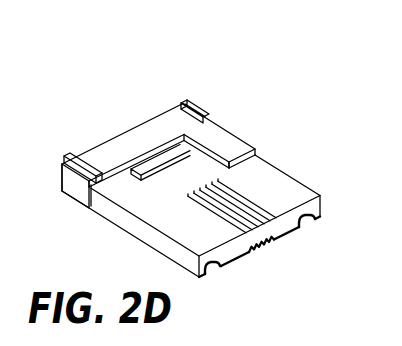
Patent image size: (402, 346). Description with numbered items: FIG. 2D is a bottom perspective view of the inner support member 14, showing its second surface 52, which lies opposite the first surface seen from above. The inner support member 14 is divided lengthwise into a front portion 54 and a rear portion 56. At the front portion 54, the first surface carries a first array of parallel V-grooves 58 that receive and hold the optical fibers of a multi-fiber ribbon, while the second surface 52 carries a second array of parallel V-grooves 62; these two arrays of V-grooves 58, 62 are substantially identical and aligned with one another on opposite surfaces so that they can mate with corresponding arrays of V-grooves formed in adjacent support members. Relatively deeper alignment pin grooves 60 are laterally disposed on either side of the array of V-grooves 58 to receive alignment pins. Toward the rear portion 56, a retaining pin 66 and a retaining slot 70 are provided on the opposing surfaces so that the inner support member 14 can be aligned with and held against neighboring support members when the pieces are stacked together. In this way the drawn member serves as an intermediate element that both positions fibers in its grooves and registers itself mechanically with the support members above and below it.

The inner support member 14 is at (213, 67).
The second surface 52 is at (228, 152).
The front portion 54 is at (323, 168).
The rear portion 56 is at (50, 201).
The first array of parallel V-grooves 58 is at (262, 248).
The alignment pin grooves 60 is at (305, 221).
The second array of parallel V-grooves 62 is at (276, 225).
The retaining pin 66 is at (78, 152).
The retaining slot 70 is at (193, 105).